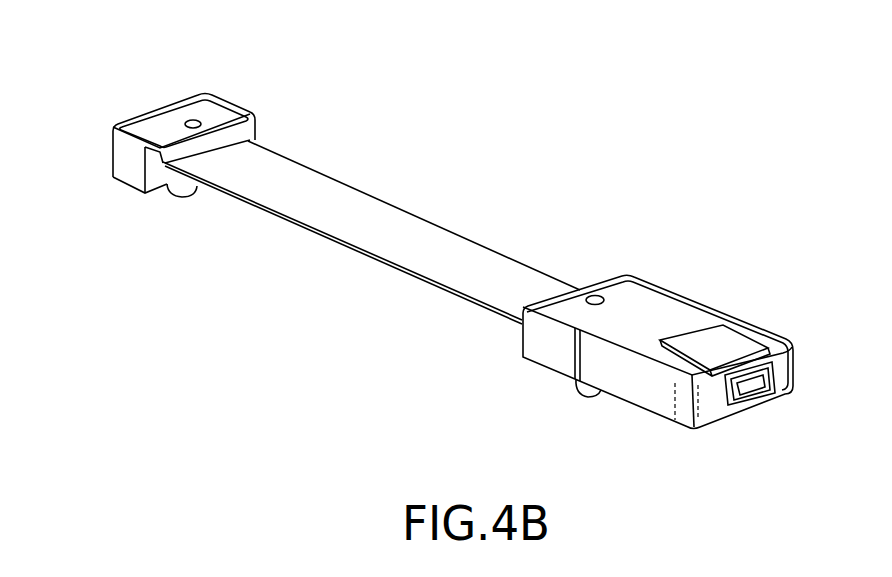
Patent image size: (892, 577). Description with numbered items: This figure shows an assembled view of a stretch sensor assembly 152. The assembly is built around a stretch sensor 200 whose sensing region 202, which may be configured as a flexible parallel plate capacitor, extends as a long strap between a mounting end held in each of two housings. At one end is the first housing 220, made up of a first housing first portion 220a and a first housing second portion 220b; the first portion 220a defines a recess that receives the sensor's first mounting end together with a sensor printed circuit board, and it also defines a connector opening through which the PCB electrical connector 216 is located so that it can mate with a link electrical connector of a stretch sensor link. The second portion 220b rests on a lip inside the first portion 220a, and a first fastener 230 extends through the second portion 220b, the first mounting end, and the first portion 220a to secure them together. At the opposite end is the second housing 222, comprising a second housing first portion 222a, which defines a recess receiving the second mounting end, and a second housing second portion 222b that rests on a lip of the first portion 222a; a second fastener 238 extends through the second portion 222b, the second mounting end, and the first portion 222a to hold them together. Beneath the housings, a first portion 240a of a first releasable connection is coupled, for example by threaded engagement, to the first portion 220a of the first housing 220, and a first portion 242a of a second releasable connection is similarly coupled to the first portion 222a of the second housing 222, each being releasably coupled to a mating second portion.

The stretch sensor assembly 152 is at (698, 212).
The stretch sensor 200 is at (333, 165).
The sensing region 202 is at (387, 237).
The PCB electrical connector 216 is at (732, 398).
The first housing 220 is at (756, 310).
The first housing first portion 220a is at (643, 394).
The first housing second portion 220b is at (653, 337).
The second housing 222 is at (245, 95).
The second housing first portion 222a is at (133, 162).
The second housing second portion 222b is at (158, 127).
The first fastener 230 is at (595, 296).
The second fastener 238 is at (193, 119).
The first portion of first releasable connection 240a is at (593, 393).
The first portion of second releasable connection 242a is at (180, 197).